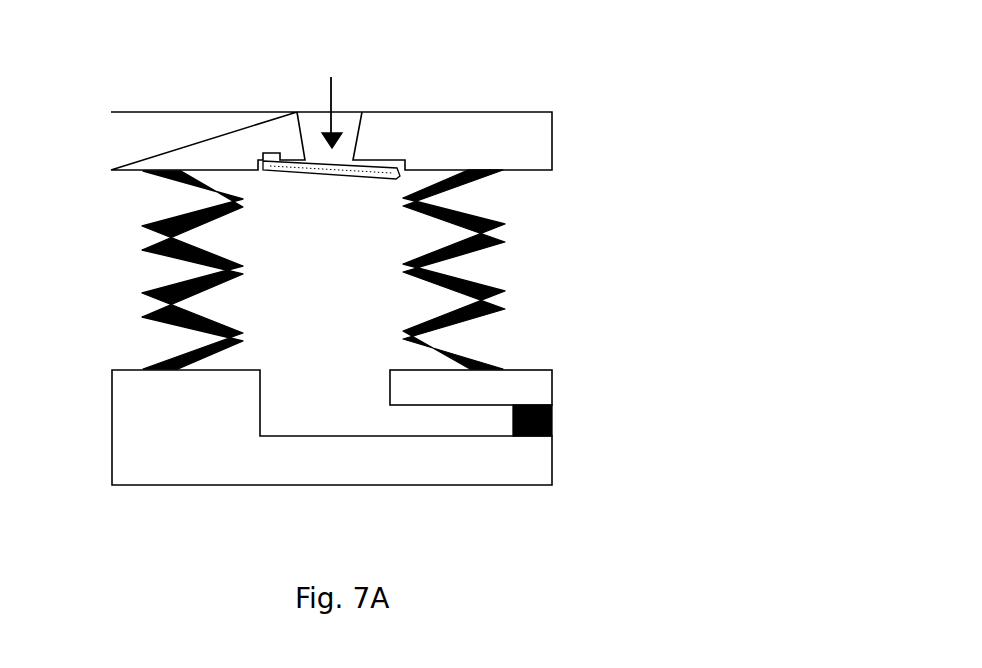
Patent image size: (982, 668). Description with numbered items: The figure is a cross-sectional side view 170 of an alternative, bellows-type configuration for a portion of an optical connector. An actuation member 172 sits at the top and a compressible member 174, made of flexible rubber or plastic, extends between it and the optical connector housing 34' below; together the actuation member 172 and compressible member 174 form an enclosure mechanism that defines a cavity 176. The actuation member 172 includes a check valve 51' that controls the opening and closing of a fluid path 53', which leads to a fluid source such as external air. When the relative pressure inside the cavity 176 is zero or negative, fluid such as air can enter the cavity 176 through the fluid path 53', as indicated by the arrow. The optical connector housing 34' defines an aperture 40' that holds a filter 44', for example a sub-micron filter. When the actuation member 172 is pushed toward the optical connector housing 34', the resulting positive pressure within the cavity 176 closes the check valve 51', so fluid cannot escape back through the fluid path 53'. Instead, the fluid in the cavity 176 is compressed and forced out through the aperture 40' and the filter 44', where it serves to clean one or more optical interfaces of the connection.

The cross-sectional side view 170 is at (612, 56).
The actuation member 172 is at (547, 138).
The fluid path 53' is at (353, 97).
The check valve 51' is at (331, 203).
The cavity 176 is at (353, 312).
The compressible member 174 is at (505, 300).
The optical connector housing 34' is at (290, 427).
The aperture 40' is at (462, 457).
The filter 44' is at (570, 410).